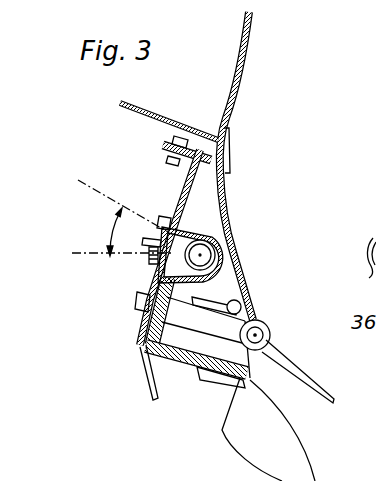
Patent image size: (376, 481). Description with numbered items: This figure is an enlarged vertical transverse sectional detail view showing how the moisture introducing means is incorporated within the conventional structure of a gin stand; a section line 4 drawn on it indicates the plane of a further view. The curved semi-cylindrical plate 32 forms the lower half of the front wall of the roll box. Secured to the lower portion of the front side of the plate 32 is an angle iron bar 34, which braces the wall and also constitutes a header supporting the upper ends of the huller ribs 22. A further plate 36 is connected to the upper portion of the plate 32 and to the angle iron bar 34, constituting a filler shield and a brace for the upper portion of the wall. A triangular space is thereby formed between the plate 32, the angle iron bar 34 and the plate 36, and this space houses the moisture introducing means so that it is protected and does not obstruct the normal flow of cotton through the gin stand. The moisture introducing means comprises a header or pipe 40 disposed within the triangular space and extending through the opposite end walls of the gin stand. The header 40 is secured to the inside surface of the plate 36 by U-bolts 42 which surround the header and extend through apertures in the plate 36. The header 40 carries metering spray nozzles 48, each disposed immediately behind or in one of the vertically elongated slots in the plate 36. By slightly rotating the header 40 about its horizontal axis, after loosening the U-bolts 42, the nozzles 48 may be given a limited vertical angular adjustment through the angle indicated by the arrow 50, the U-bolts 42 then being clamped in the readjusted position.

The section line 4- 4 is at (125, 134).
The huller ribs 22 is at (288, 438).
The curved semi-cylindrical plate 32 is at (229, 221).
The angle iron bar 34 is at (196, 368).
The plate 36 is at (188, 181).
The header 40 is at (217, 252).
The U-bolts 42 is at (196, 228).
The metering spray nozzles 48 is at (160, 240).
The arrow 50 is at (109, 237).